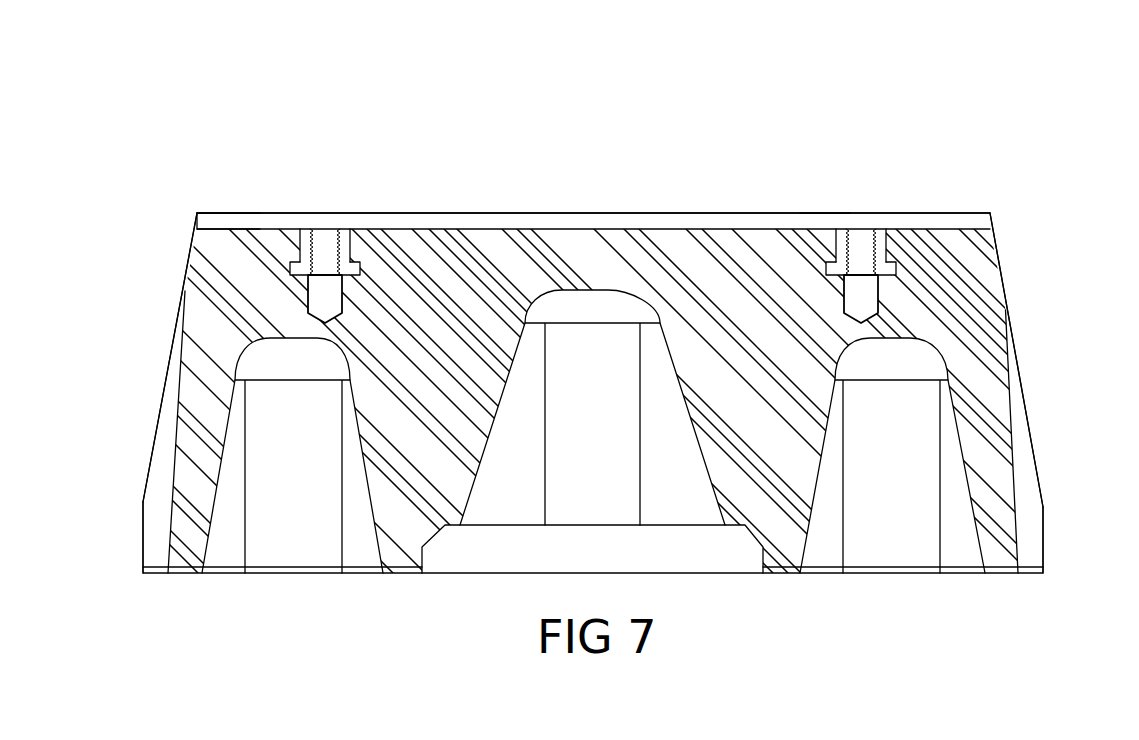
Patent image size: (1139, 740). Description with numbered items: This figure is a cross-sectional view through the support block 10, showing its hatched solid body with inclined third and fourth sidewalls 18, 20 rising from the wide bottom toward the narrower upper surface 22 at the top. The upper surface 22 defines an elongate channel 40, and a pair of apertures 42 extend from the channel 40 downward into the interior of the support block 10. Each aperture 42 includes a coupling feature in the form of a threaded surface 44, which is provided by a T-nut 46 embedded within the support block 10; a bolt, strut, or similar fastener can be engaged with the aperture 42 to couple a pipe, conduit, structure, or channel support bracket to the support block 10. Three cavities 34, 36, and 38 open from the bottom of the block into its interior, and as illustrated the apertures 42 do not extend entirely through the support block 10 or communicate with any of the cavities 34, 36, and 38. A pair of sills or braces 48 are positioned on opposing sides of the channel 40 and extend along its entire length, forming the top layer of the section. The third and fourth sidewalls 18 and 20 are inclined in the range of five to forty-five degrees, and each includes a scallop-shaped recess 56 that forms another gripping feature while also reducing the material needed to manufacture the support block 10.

The support block 10 is at (980, 116).
The third sidewall 18 is at (1000, 260).
The fourth sidewall 20 is at (188, 256).
The upper surface 22 is at (823, 218).
The cavity 34 is at (884, 547).
The cavity 36 is at (295, 543).
The cavity 38 is at (596, 497).
The elongate channel 40 is at (622, 213).
The aperture 42 is at (345, 245).
The threaded surface 44 is at (300, 253).
The T-nut 46 is at (363, 272).
The brace 48 is at (215, 221).
The scallop-shaped recess 56 is at (155, 520).